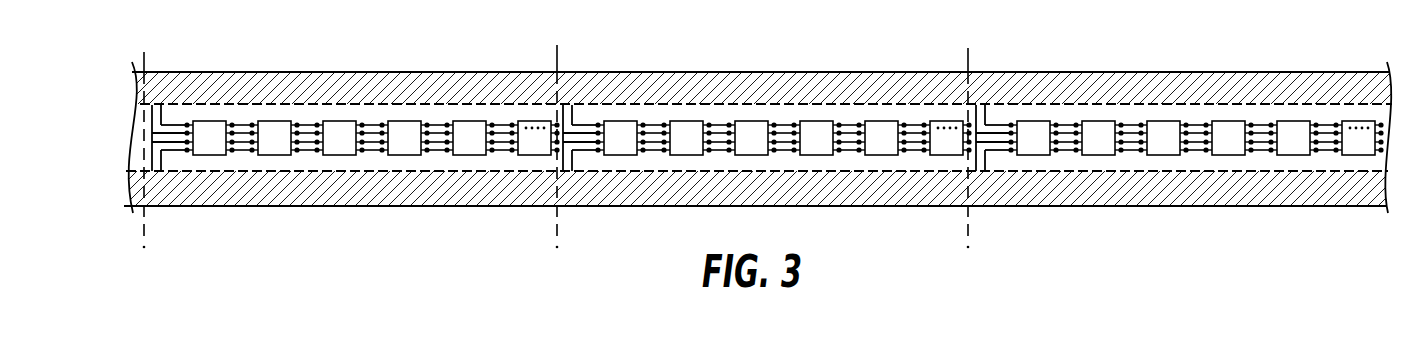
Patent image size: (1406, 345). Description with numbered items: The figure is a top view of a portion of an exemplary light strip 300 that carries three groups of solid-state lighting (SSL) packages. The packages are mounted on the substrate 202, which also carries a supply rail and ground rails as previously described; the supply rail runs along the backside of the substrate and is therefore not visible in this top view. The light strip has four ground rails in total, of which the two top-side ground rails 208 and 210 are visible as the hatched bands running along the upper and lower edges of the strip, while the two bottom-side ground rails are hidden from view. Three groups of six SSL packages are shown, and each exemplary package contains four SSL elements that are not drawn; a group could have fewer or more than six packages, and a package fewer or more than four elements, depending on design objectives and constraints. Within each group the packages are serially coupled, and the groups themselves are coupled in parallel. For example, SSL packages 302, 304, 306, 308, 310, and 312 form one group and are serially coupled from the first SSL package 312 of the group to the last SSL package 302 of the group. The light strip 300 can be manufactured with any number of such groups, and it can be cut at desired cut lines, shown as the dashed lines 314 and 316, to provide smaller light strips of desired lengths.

The light strip 300 is at (258, 29).
The substrate 202 is at (308, 110).
The top-side ground rail 208 is at (467, 87).
The top-side ground rail 210 is at (450, 187).
The cut line 314 is at (555, 51).
The cut line 316 is at (970, 57).
The SSL package 302 is at (622, 120).
The SSL package 304 is at (688, 120).
The SSL package 306 is at (752, 120).
The SSL package 308 is at (817, 120).
The SSL package 310 is at (882, 120).
The SSL package 312 is at (946, 120).